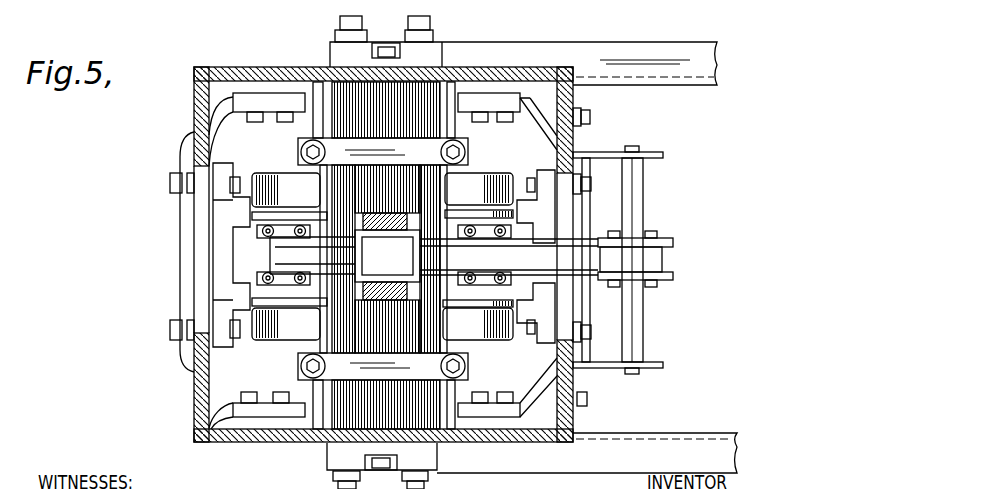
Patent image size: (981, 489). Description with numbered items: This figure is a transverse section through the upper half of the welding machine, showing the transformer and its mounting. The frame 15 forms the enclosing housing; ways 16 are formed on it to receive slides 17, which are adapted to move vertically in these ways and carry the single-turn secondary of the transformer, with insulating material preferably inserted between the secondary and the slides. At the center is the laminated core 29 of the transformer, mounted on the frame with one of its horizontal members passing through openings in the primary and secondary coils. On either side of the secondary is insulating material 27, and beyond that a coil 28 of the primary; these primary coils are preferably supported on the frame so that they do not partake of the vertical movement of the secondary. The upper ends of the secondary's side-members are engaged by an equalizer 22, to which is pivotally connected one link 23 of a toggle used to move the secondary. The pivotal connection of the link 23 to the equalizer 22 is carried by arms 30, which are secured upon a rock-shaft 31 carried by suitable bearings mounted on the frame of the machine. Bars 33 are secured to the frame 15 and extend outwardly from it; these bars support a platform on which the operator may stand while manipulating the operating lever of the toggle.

The frame 15 is at (560, 98).
The ways 16 is at (222, 193).
The slides 17 is at (443, 255).
The equalizer 22 is at (290, 268).
The link 23 is at (410, 213).
The insulating material 27 is at (250, 171).
The coil 28 is at (285, 180).
The core 29 is at (427, 97).
The arms 30 is at (589, 275).
The rock-shaft 31 is at (635, 328).
The bars 33 is at (688, 52).